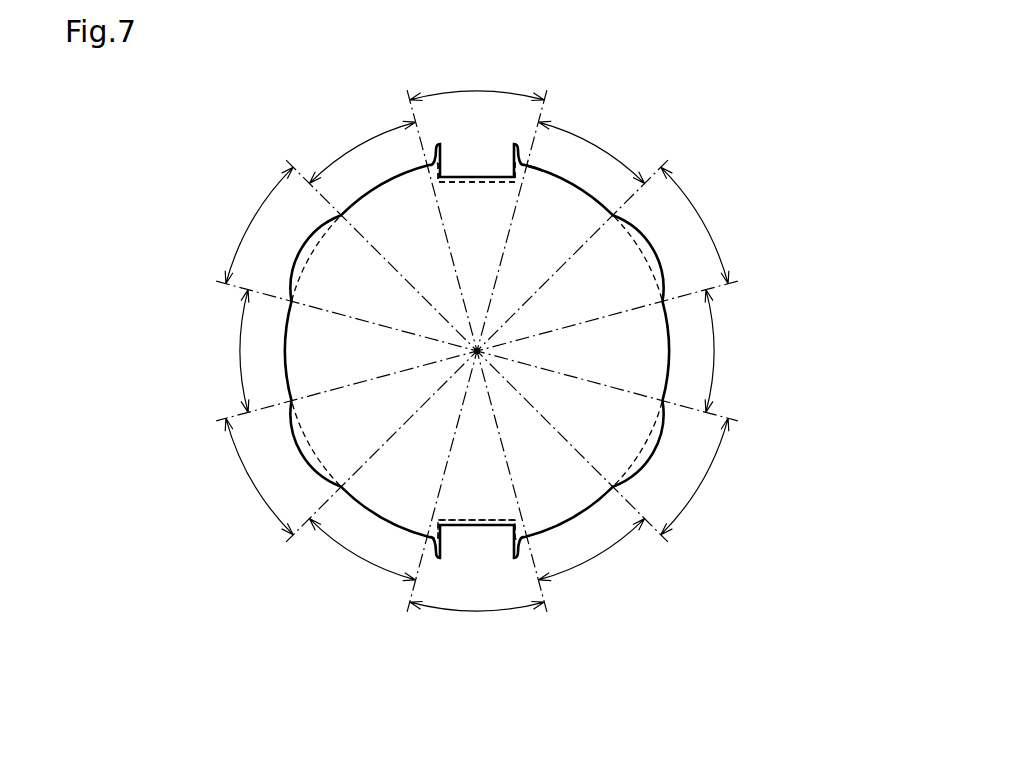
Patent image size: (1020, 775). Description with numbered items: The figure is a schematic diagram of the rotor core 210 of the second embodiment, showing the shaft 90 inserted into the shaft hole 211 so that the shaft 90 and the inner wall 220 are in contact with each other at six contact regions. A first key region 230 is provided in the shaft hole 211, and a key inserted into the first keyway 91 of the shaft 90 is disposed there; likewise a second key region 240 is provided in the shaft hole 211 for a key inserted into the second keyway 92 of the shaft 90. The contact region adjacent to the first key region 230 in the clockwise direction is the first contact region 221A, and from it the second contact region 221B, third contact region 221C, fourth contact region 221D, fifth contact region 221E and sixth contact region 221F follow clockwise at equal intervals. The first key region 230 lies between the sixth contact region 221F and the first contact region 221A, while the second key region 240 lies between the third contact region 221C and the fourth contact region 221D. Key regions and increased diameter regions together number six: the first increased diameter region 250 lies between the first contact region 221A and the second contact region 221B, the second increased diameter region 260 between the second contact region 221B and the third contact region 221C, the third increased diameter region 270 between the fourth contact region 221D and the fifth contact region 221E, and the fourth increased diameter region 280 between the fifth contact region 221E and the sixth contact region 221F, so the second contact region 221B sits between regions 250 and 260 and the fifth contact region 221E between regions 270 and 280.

The rotor core 210 is at (754, 103).
The shaft hole 211 is at (558, 120).
The inner wall 220 is at (651, 262).
The first contact region 221A is at (595, 146).
The second contact region 221B is at (714, 351).
The third contact region 221C is at (595, 556).
The fourth contact region 221D is at (359, 556).
The fifth contact region 221E is at (240, 351).
The sixth contact region 221F is at (359, 146).
The first key region 230 is at (478, 91).
The second key region 240 is at (478, 612).
The first increased diameter region 250 is at (702, 221).
The second increased diameter region 260 is at (702, 481).
The third increased diameter region 270 is at (252, 481).
The fourth increased diameter region 280 is at (252, 221).
The shaft 90 is at (300, 428).
The first keyway 91 is at (476, 183).
The second keyway 92 is at (479, 520).